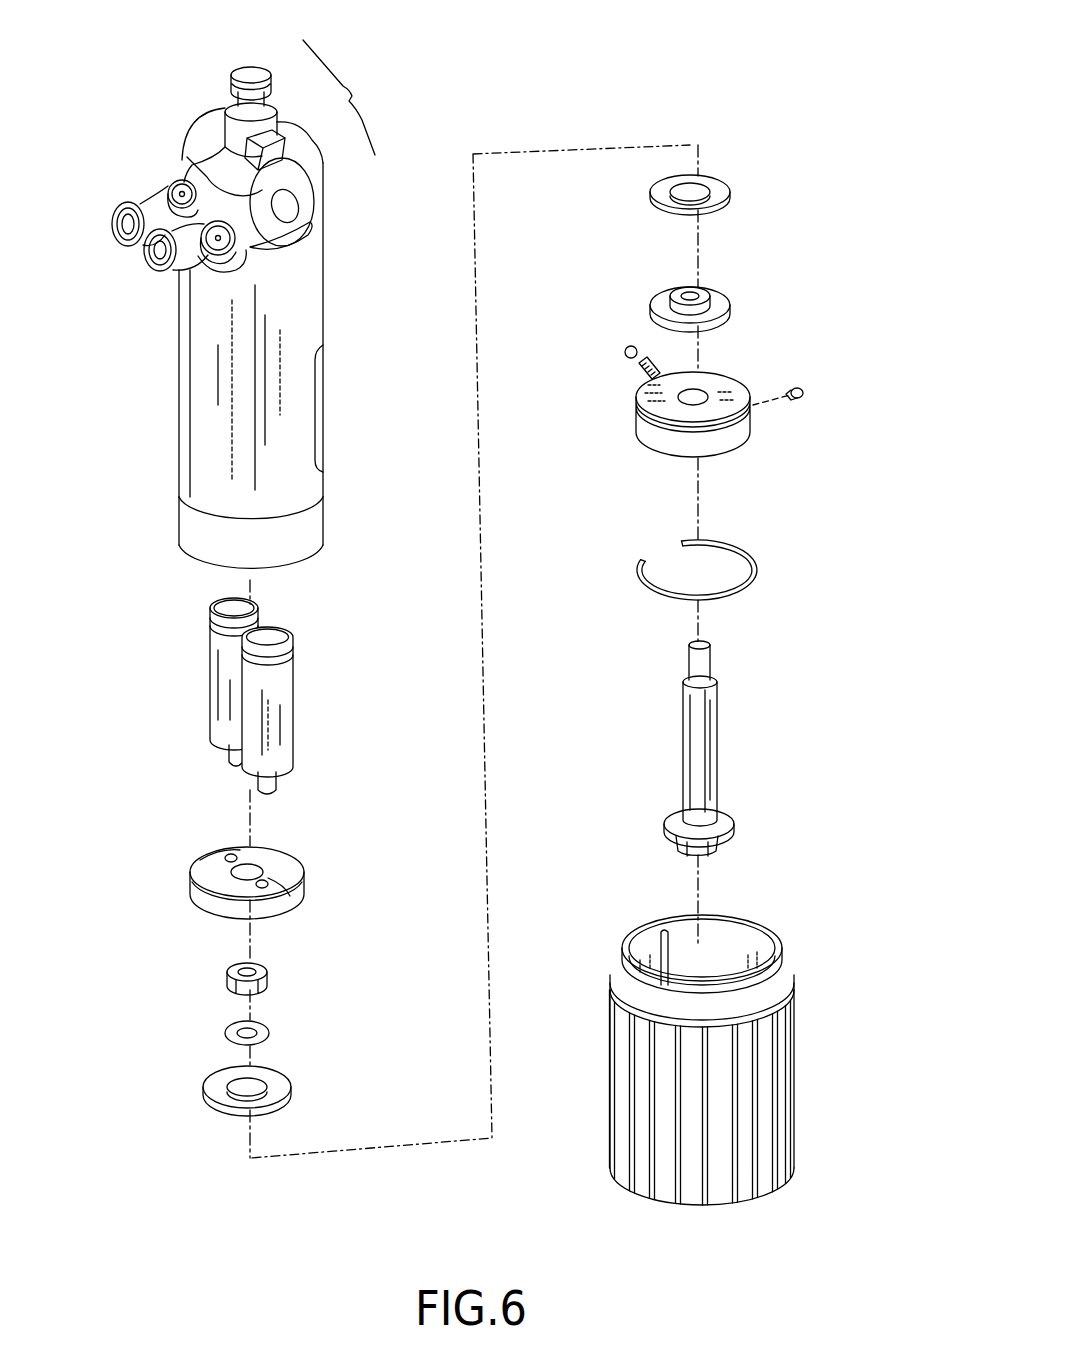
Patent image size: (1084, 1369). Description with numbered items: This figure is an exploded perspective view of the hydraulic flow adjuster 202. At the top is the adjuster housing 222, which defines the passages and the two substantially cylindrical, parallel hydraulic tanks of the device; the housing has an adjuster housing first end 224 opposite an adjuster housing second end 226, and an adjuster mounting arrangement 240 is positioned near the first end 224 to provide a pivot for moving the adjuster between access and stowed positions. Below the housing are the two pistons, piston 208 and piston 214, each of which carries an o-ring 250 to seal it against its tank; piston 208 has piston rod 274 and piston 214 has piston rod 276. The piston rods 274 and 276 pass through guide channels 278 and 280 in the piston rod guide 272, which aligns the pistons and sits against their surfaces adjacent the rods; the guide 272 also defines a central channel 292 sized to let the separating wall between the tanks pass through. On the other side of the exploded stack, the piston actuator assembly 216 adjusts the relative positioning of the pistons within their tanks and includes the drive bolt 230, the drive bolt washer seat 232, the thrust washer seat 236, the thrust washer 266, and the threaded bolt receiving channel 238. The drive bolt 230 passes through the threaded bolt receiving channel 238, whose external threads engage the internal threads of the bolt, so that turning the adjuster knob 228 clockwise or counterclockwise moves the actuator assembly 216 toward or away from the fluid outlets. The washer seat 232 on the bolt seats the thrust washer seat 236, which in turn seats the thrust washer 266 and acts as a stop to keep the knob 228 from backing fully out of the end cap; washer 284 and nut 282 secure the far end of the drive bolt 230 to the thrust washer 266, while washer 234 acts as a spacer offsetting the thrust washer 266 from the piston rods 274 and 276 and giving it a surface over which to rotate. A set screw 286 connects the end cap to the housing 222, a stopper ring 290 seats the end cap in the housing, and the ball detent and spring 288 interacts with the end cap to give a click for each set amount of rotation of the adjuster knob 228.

The hydraulic flow adjuster 202 is at (791, 82).
The piston 208 is at (294, 680).
The piston 214 is at (210, 670).
The piston actuator assembly 216 is at (196, 960).
The adjuster housing 222 is at (324, 281).
The adjuster housing first end 224 is at (284, 150).
The adjuster housing second end 226 is at (325, 522).
The adjuster knob 228 is at (795, 1052).
The drive bolt 230 is at (719, 770).
The drive bolt washer seat 232 is at (715, 677).
The washer 234 is at (293, 1087).
The thrust washer seat 236 is at (735, 302).
The threaded bolt receiving channel 238 is at (706, 390).
The adjuster mounting arrangement 240 is at (350, 97).
The o-ring 250 is at (214, 638).
The thrust washer 266 is at (733, 189).
The piston rod guide 272 is at (299, 870).
The piston rod 274 is at (278, 784).
The piston rod 276 is at (228, 755).
The guide channel 278 is at (270, 890).
The guide channel 280 is at (231, 859).
The nut 282 is at (267, 972).
The washer 284 is at (271, 1033).
The set screw 286 is at (803, 398).
The ball detent and spring 288 is at (615, 355).
The stopper ring 290 is at (758, 556).
The central channel 292 is at (253, 872).